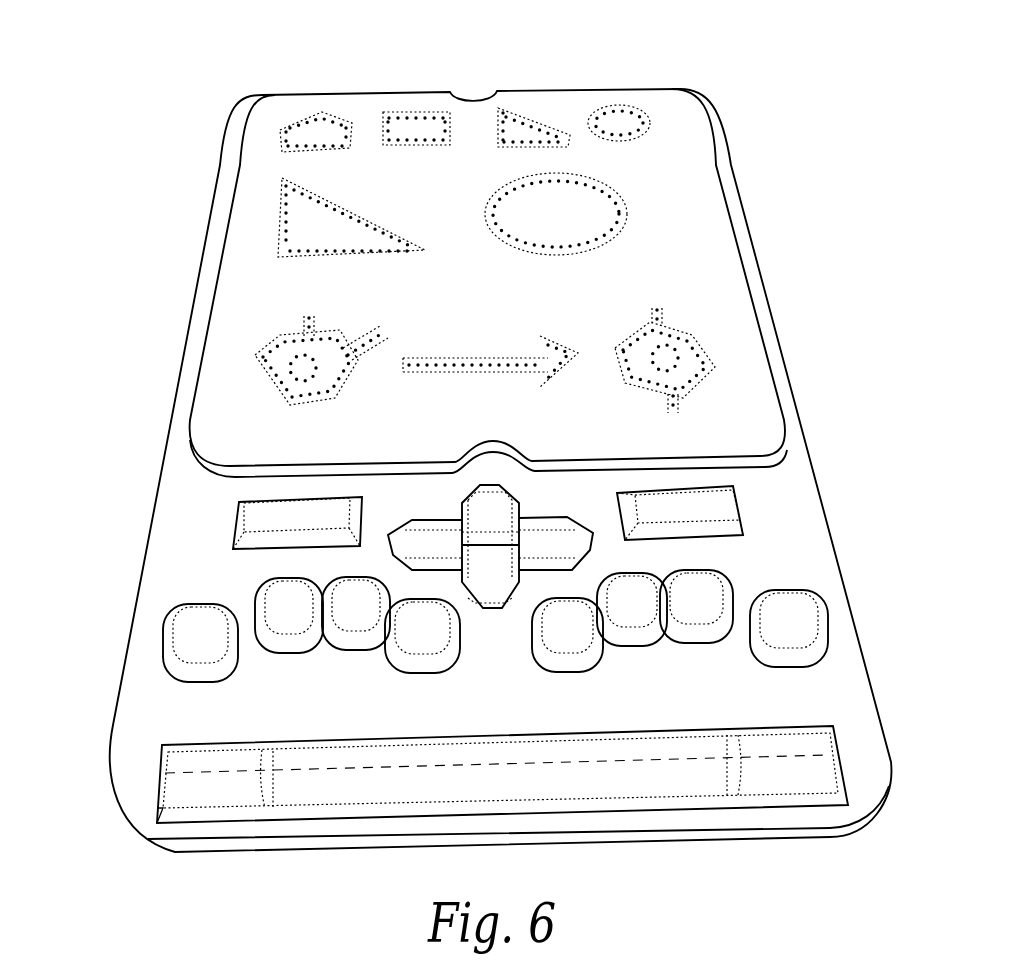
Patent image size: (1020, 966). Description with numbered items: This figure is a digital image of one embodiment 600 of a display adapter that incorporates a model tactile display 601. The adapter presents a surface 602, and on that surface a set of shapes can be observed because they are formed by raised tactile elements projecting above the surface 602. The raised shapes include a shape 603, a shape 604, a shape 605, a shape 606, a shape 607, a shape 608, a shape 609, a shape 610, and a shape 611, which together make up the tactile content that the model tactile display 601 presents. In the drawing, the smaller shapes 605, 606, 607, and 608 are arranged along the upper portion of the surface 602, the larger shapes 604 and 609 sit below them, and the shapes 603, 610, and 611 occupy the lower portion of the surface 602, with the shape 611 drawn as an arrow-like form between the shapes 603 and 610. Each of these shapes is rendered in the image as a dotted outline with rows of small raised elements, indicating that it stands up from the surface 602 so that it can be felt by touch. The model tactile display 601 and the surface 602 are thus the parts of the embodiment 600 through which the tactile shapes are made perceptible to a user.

The display adapter embodiment 600 is at (128, 516).
The model tactile display 601 is at (183, 703).
The surface 602 is at (221, 424).
The shape 603 is at (287, 360).
The shape 604 is at (307, 232).
The shape 605 is at (296, 123).
The shape 606 is at (418, 127).
The shape 607 is at (523, 120).
The shape 608 is at (613, 122).
The shape 609 is at (580, 210).
The shape 610 is at (665, 360).
The shape 611 is at (503, 372).